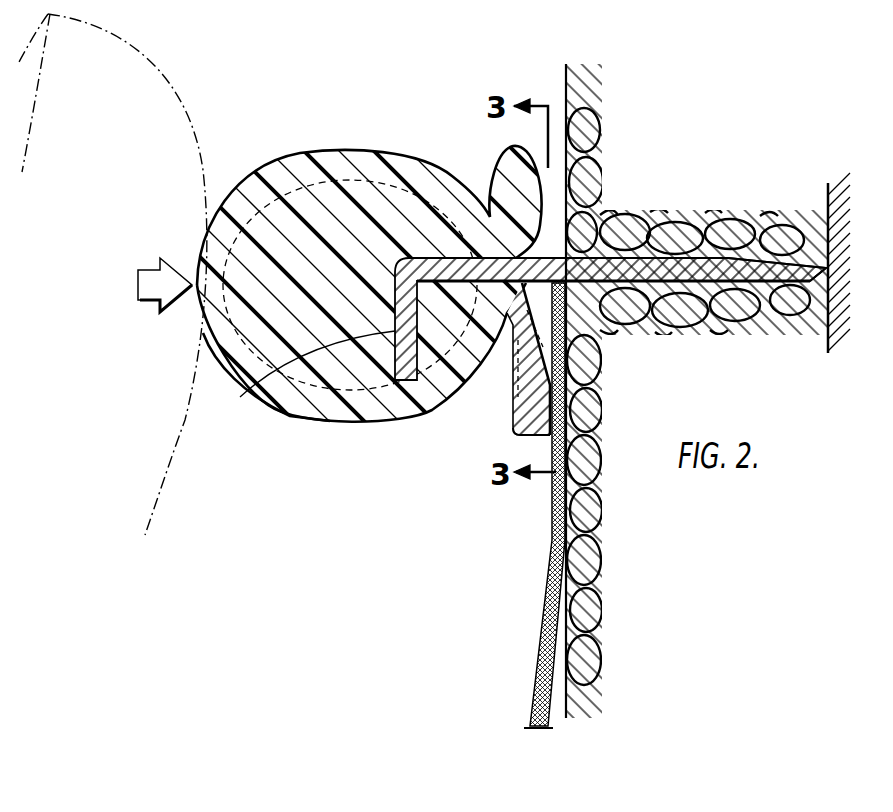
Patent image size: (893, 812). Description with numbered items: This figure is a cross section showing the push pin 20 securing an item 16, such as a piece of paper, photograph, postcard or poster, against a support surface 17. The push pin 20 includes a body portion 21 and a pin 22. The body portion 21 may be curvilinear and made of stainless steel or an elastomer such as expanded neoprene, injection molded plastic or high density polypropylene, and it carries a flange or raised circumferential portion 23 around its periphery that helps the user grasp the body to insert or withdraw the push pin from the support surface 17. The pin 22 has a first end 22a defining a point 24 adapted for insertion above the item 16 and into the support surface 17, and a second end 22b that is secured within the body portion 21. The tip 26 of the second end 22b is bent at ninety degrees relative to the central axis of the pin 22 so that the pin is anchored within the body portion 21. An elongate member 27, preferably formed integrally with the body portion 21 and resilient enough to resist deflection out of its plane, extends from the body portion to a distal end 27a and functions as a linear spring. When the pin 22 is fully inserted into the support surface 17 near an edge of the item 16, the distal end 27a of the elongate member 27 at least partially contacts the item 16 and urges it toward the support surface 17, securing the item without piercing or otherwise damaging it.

The item 16 is at (542, 660).
The support surface 17 is at (592, 128).
The push pin 20 is at (328, 446).
The body portion 21 is at (302, 205).
The pin 22 is at (400, 268).
The first end of the pin 22a is at (772, 312).
The second end of the pin 22b is at (407, 385).
The flange or raised circumferential portion 23 is at (273, 408).
The point 24 is at (805, 265).
The tip 26 is at (262, 392).
The elongate member 27 is at (535, 412).
The distal end of the elongate member 27a is at (530, 438).